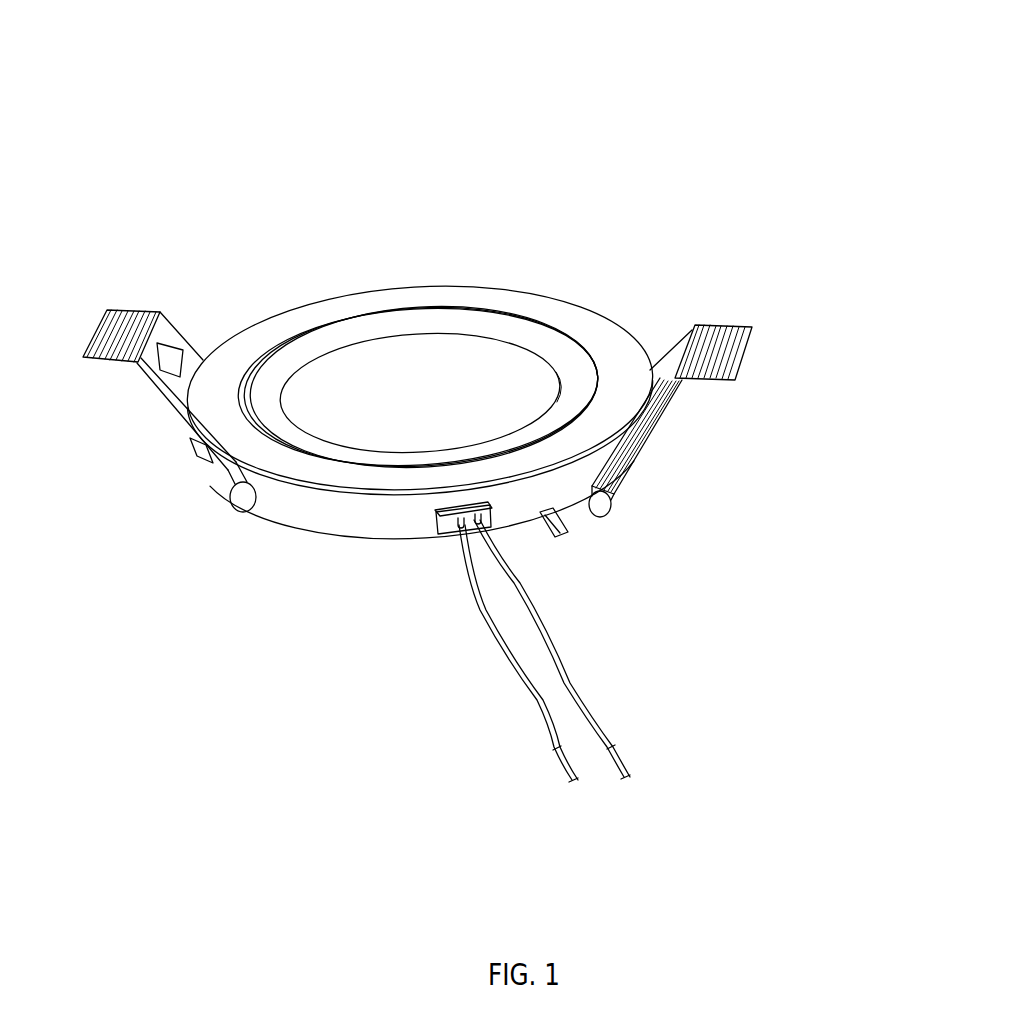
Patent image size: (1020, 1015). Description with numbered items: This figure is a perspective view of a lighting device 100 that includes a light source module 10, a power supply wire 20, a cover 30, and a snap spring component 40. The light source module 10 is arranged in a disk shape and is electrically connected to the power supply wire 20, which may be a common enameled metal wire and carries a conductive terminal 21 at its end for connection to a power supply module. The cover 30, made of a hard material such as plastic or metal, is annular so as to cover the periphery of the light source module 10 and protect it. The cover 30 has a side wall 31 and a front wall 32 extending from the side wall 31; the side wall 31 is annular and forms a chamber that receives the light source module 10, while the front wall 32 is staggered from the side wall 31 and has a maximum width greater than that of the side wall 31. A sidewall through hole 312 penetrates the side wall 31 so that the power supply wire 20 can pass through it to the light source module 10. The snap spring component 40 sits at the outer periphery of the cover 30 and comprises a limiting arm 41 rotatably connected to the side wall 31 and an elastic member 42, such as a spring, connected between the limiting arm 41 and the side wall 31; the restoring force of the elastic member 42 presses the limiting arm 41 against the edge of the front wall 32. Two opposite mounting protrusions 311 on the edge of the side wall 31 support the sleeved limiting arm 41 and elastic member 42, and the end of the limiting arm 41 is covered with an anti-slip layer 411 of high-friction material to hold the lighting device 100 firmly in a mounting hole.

The lighting device 100 is at (598, 46).
The light source module 10 is at (450, 318).
The power supply wire 20 is at (490, 622).
The conductive terminal 21 is at (575, 780).
The cover 30 is at (648, 297).
The side wall 31 is at (363, 523).
The mounting protrusions 311 is at (563, 520).
The sidewall through hole 312 is at (438, 513).
The front wall 32 is at (553, 303).
The snap spring component 40 is at (464, 374).
The limiting arm 41 is at (647, 432).
The anti-slip layer 411 is at (740, 362).
The elastic member 42 is at (607, 513).